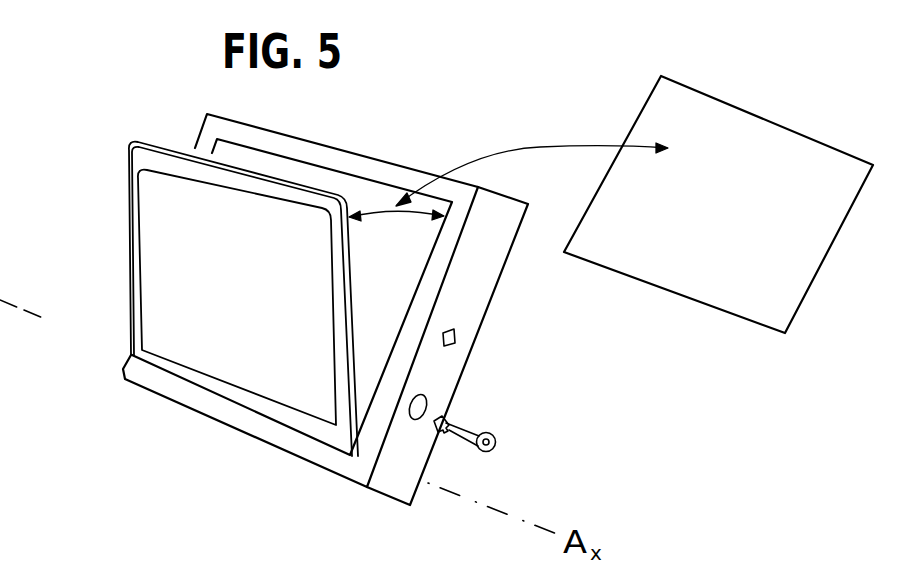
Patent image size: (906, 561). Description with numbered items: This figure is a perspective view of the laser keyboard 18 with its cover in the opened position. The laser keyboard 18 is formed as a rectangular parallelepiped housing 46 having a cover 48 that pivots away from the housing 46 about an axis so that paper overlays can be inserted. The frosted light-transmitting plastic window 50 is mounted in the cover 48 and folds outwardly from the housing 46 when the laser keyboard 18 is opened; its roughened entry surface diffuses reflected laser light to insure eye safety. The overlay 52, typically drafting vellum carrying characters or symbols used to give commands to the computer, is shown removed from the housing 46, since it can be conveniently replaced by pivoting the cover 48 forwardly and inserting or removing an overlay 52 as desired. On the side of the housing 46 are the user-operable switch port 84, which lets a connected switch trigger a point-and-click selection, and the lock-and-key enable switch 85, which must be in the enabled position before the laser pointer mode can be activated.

The laser keyboard 18 is at (407, 146).
The housing 46 is at (462, 282).
The cover 48 is at (128, 268).
The plastic window 50 is at (249, 300).
The overlay 52 is at (757, 128).
The switch port 84 is at (453, 340).
The lock-and-key enable switch 85 is at (430, 413).